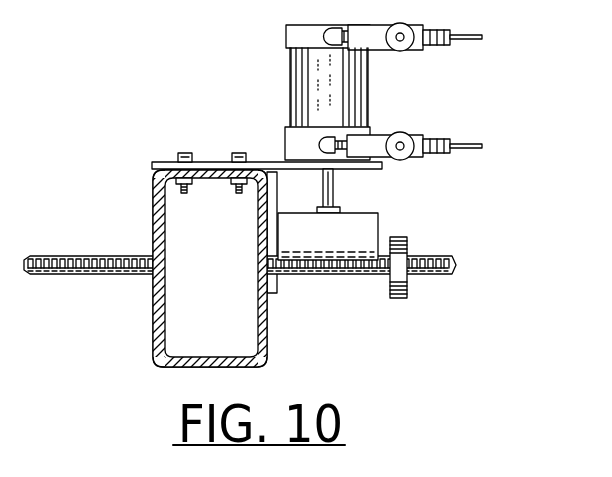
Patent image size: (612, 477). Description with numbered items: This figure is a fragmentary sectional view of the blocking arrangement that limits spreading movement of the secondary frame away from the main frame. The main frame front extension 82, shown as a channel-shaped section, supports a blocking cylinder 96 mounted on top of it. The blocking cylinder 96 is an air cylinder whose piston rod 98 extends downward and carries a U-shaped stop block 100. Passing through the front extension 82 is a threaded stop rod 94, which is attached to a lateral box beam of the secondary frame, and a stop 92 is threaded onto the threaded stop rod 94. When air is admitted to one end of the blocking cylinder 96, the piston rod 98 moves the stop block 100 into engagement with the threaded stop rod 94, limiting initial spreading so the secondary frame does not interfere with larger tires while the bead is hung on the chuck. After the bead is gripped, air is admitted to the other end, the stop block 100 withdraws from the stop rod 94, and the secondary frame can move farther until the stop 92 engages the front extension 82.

The main frame front extension 82 is at (157, 310).
The stop 92 is at (401, 248).
The threaded stop rod 94 is at (453, 265).
The blocking cylinder 96 is at (363, 95).
The piston rod 98 is at (333, 188).
The U-shaped stop block 100 is at (372, 226).